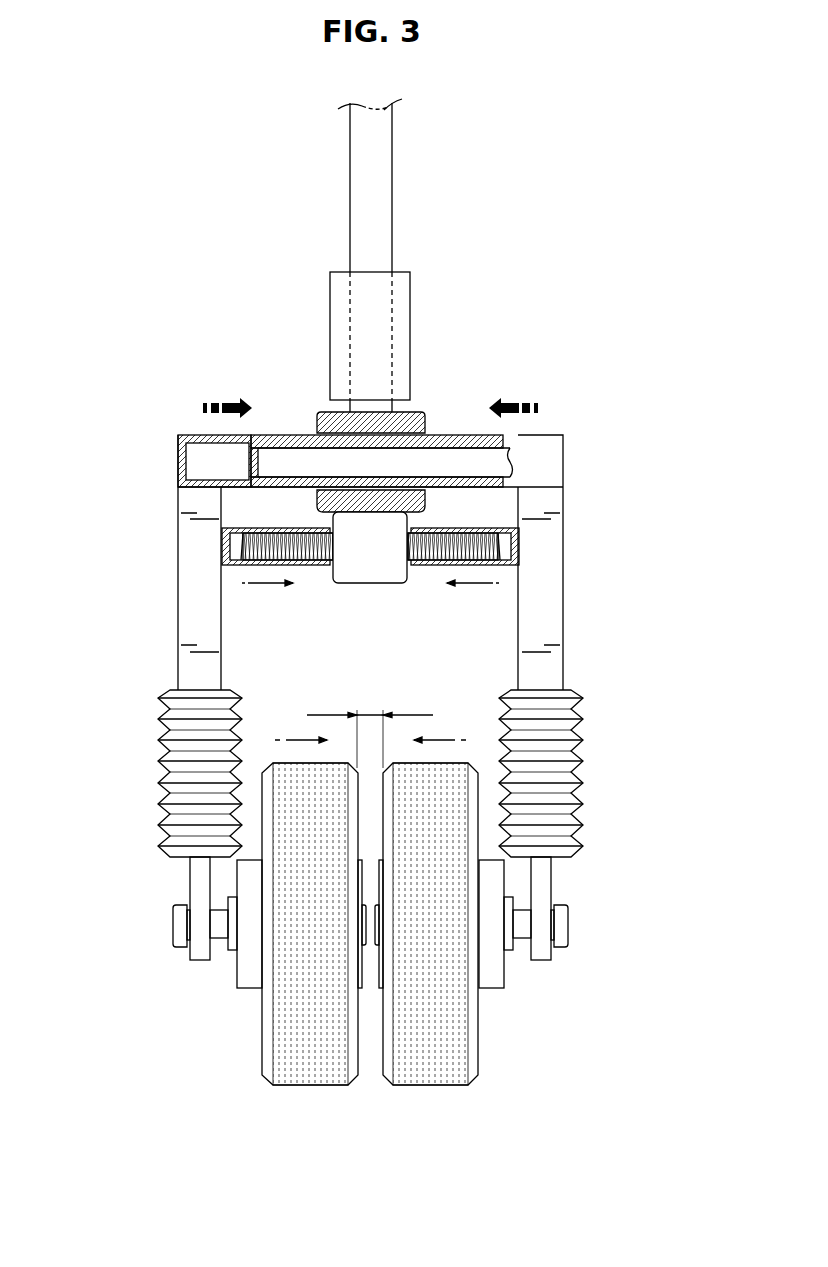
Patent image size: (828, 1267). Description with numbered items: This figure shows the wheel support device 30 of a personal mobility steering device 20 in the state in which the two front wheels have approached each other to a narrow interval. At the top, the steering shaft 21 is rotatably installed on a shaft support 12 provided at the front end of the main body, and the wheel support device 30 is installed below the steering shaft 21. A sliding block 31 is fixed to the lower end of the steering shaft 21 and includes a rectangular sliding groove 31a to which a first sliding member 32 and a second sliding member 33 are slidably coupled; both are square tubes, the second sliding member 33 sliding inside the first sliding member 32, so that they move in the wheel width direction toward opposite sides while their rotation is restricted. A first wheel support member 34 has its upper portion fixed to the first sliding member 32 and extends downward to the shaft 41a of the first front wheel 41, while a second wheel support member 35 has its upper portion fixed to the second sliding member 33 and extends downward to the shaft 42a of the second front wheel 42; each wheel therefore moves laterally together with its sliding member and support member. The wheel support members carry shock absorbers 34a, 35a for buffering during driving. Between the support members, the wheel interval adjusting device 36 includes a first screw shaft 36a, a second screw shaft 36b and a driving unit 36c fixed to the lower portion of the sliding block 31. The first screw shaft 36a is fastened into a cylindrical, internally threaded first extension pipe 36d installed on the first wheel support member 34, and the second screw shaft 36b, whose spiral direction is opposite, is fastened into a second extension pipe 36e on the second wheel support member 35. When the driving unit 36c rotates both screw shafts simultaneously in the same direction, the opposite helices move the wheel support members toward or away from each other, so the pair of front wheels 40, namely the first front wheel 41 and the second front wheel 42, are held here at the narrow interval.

The steering device 20 is at (404, 253).
The steering shaft 21 is at (383, 192).
The shaft support 12 is at (403, 315).
The wheel support device 30 is at (374, 611).
The sliding block 31 is at (415, 420).
The sliding groove 31a is at (314, 440).
The first sliding member 32 is at (200, 438).
The second sliding member 33 is at (465, 440).
The first wheel support member 34 is at (187, 594).
The second wheel support member 35 is at (555, 593).
The shock absorber 34a is at (170, 758).
The shock absorber 35a is at (572, 760).
The wheel interval adjusting device 36 is at (370, 576).
The first screw shaft 36a is at (250, 560).
The second screw shaft 36b is at (428, 560).
The driving unit 36c is at (368, 577).
The first extension pipe 36d is at (273, 528).
The second extension pipe 36e is at (463, 528).
The roller pair 40 is at (370, 935).
The first front wheel 41 is at (308, 1080).
The second front wheel 42 is at (430, 1080).
The shaft of the first front wheel 41a is at (220, 933).
The shaft of the second front wheel 42a is at (523, 933).